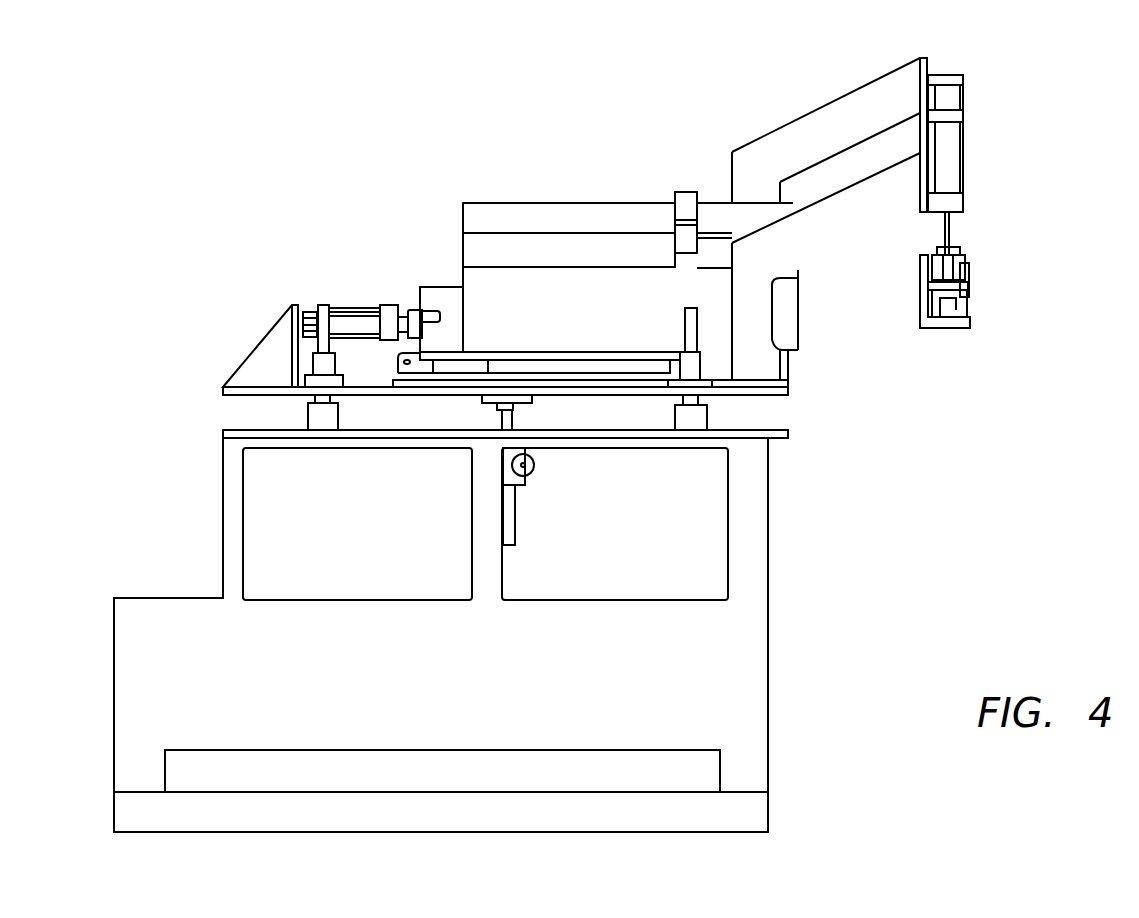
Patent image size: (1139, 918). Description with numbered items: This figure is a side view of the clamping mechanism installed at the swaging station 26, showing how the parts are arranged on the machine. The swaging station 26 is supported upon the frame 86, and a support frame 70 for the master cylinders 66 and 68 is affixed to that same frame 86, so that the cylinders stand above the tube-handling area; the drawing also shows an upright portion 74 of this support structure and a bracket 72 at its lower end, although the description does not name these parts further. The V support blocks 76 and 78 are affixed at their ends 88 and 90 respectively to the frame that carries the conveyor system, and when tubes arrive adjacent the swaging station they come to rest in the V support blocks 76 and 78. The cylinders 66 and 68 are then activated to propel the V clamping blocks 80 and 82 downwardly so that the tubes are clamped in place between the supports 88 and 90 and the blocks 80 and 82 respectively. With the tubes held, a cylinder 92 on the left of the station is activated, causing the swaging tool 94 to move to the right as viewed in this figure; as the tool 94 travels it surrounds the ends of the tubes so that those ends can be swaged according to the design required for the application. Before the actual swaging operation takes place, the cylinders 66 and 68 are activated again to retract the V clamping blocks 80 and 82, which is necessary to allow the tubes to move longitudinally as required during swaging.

The swaging station 26 is at (562, 181).
The master cylinder 66 is at (950, 166).
The master cylinder 68 is at (953, 101).
The support frame 70 is at (820, 88).
The bracket 72 is at (753, 322).
The arm upright 74 is at (730, 175).
The V support block 76 is at (968, 288).
The V support block 78 is at (970, 323).
The V clamping block 80 is at (930, 305).
The V clamping block 82 is at (935, 268).
The frame 86 is at (773, 395).
The end of V support block 88 is at (968, 280).
The end of V support block 90 is at (947, 328).
The cylinder 92 is at (350, 325).
The swaging tool 94 is at (470, 282).